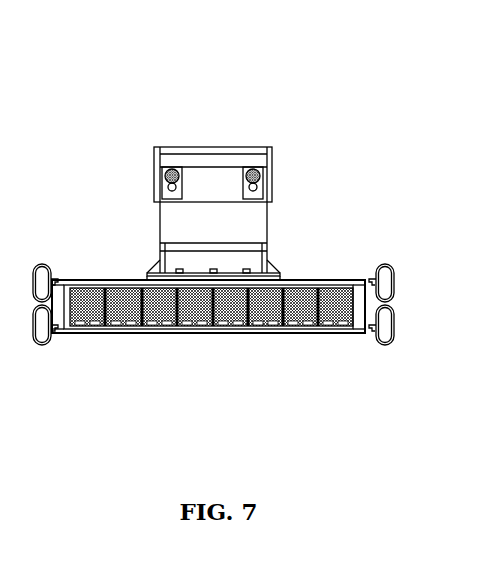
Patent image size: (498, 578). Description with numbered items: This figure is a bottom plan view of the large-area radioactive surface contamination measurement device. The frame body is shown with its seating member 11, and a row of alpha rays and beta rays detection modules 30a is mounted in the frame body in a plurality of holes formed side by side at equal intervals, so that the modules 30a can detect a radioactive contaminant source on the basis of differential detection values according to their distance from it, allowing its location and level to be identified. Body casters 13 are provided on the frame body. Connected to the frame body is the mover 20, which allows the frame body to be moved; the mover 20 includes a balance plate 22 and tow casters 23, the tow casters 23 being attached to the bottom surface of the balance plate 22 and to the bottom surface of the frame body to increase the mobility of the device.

The mover 20 is at (173, 151).
The balance plate 22 is at (256, 212).
The tow caster 23 is at (243, 178).
The body caster 13 is at (42, 263).
The seating member 11 is at (327, 334).
The alpha rays and beta rays detection module 30a is at (147, 334).